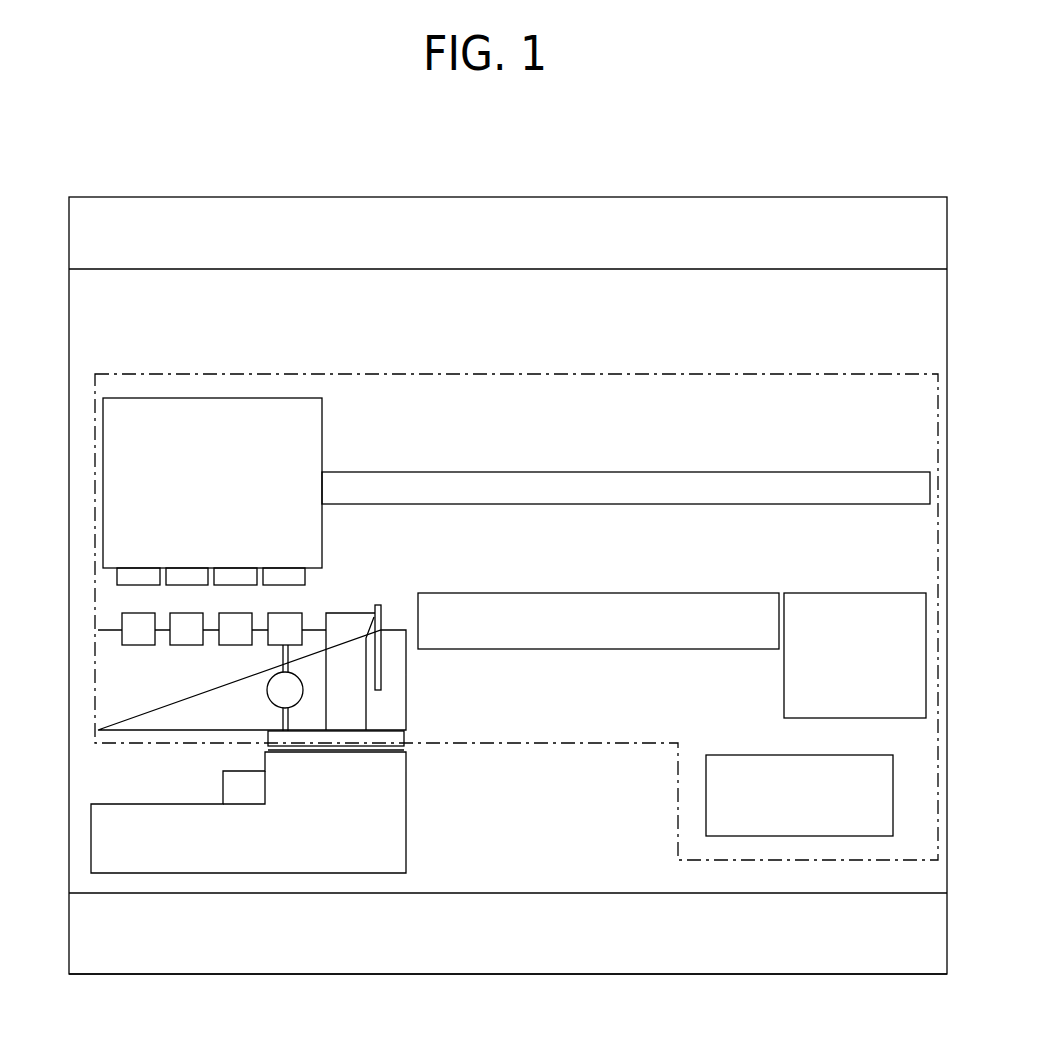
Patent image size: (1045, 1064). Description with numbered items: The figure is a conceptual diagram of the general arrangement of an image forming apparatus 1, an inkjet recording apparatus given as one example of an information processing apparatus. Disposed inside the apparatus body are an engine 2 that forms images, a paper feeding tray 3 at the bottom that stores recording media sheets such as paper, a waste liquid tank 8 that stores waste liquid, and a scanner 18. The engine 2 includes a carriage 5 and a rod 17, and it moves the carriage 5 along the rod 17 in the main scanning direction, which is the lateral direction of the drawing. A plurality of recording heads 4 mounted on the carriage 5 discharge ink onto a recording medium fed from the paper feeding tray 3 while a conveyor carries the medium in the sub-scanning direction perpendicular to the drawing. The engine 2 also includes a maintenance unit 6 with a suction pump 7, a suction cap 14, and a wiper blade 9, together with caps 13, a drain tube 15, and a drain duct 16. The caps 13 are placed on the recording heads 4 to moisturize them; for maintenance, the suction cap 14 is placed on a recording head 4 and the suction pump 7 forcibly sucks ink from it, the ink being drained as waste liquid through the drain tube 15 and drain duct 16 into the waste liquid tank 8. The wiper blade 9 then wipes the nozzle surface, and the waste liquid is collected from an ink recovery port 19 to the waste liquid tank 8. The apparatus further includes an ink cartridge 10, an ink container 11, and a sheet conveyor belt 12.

The image forming apparatus 1 is at (734, 171).
The engine 2 is at (679, 374).
The paper feeding tray 3 is at (396, 974).
The recording heads 4 is at (310, 561).
The carriage 5 is at (105, 413).
The maintenance unit 6 is at (402, 665).
The suction pump 7 is at (267, 690).
The waste liquid tank 8 is at (97, 845).
The wiper blade 9 is at (378, 605).
The ink cartridge 10 is at (760, 755).
The ink container 11 is at (858, 593).
The sheet conveyor belt 12 is at (664, 593).
The caps 13 is at (122, 652).
The suction cap 14 is at (300, 608).
The drain tube 15 is at (278, 716).
The drain duct 16 is at (402, 745).
The rod 17 is at (792, 472).
The scanner 18 is at (911, 197).
The ink recovery port 19 is at (358, 698).